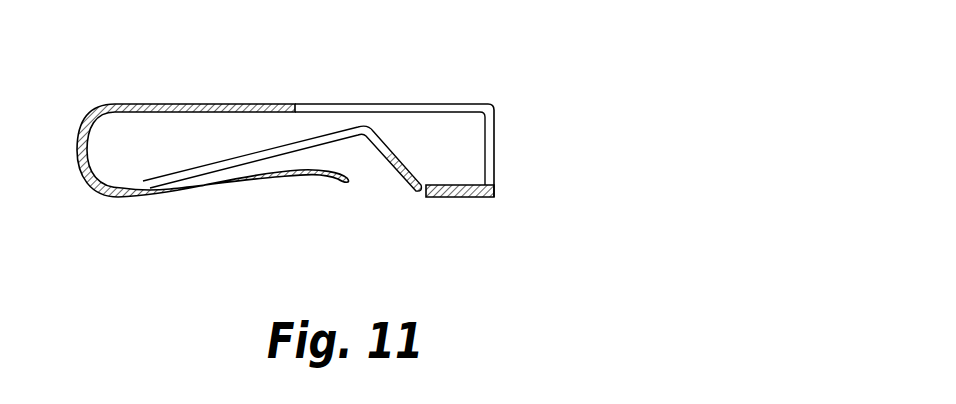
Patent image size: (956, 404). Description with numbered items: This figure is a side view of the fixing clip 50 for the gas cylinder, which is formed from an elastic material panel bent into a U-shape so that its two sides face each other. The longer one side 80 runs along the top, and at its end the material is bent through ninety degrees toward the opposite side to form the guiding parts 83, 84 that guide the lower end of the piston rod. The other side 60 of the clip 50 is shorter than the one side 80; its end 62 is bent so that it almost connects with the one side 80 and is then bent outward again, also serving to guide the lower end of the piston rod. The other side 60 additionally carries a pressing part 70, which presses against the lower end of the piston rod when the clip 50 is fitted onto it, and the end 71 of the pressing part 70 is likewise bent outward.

The fixing clip 50 is at (348, 146).
The other side 60 is at (282, 167).
The end of the other side 62 is at (399, 180).
The pressing part 70 is at (233, 182).
The end of the pressing part 71 is at (326, 181).
The one side 80 is at (332, 106).
The guiding part 83 is at (492, 135).
The guiding part 84 is at (455, 197).